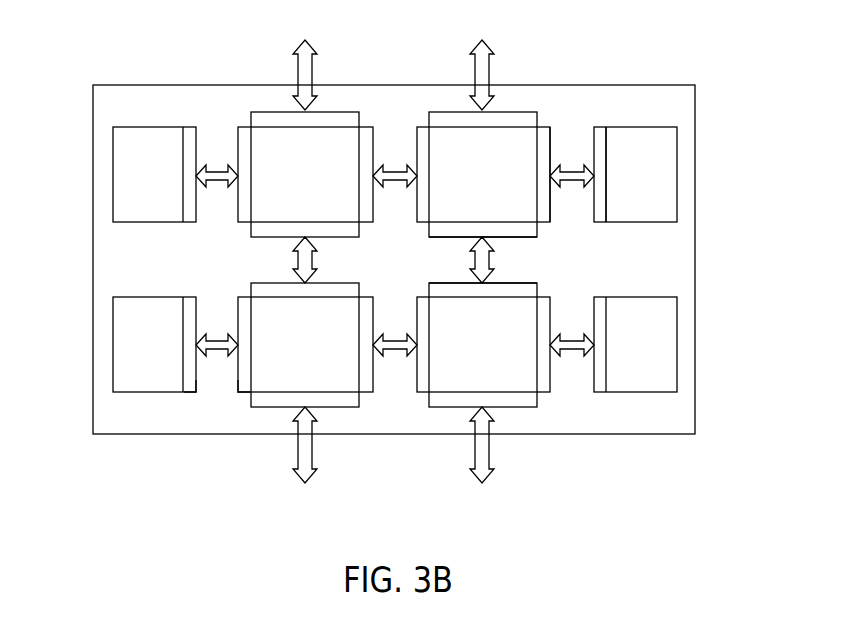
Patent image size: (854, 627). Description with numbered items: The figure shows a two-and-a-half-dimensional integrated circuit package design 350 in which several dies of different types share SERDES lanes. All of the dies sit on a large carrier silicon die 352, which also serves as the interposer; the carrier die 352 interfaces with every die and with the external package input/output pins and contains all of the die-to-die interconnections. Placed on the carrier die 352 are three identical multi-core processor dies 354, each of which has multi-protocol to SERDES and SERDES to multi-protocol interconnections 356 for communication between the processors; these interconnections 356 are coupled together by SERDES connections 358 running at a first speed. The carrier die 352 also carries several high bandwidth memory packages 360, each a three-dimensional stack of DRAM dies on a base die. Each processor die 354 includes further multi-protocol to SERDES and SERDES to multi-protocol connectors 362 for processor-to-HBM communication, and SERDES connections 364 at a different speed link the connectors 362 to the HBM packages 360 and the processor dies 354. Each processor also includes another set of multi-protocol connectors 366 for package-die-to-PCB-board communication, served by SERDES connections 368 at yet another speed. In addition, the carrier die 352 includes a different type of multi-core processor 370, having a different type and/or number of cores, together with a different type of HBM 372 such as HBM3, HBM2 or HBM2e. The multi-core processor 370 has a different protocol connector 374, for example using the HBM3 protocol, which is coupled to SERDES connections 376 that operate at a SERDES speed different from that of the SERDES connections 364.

The 2.5D integrated circuit package design 350 is at (124, 50).
The carrier silicon die 352 is at (101, 433).
The multi-core processor die 354 is at (280, 134).
The multi-protocol to SERDES and SERDES to multi-protocol interconnection 356 is at (517, 228).
The SERDES connection 358 is at (498, 257).
The high bandwidth memory (HBM) package 360 is at (117, 167).
The multi-protocol to SERDES and SERDES to multi-protocol connector 362 is at (545, 140).
The SERDES connection 364 is at (578, 158).
The multi-protocol connector 366 is at (457, 118).
The SERDES connection 368 is at (311, 62).
The multi-core processor 370 is at (328, 378).
The HBM 372 is at (112, 345).
The protocol connector 374 is at (189, 398).
The SERDES connection 376 is at (215, 355).